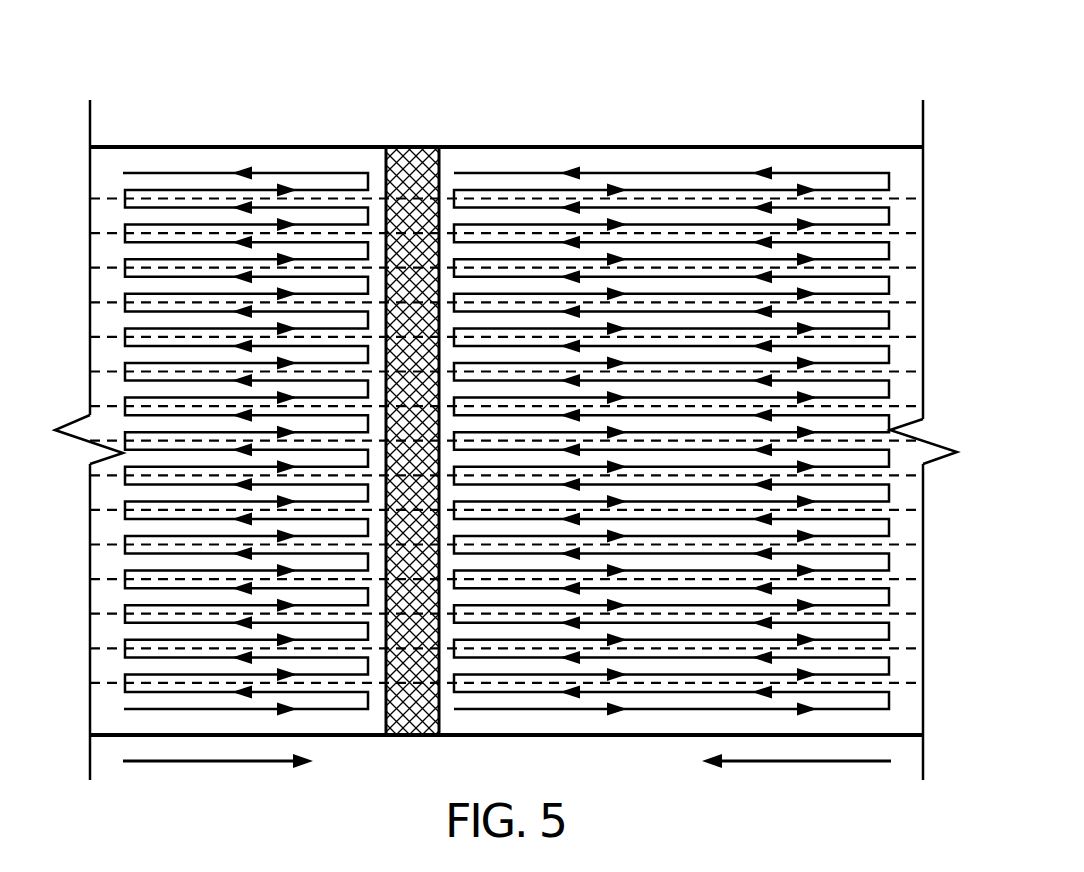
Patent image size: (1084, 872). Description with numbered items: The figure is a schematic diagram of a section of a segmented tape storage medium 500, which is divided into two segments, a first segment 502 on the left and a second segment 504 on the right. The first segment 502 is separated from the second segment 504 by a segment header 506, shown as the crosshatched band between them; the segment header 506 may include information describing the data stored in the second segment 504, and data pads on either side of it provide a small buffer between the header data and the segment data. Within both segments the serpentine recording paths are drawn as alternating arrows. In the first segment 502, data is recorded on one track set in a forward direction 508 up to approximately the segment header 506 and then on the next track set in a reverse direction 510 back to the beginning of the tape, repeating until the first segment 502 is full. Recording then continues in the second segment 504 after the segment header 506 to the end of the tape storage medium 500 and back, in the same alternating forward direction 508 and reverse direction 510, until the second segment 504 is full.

The tape storage medium 500 is at (762, 74).
The first segment 502 is at (245, 414).
The second segment 504 is at (671, 414).
The segment header 506 is at (437, 424).
The forward direction 508 is at (218, 773).
The reverse direction 510 is at (796, 773).